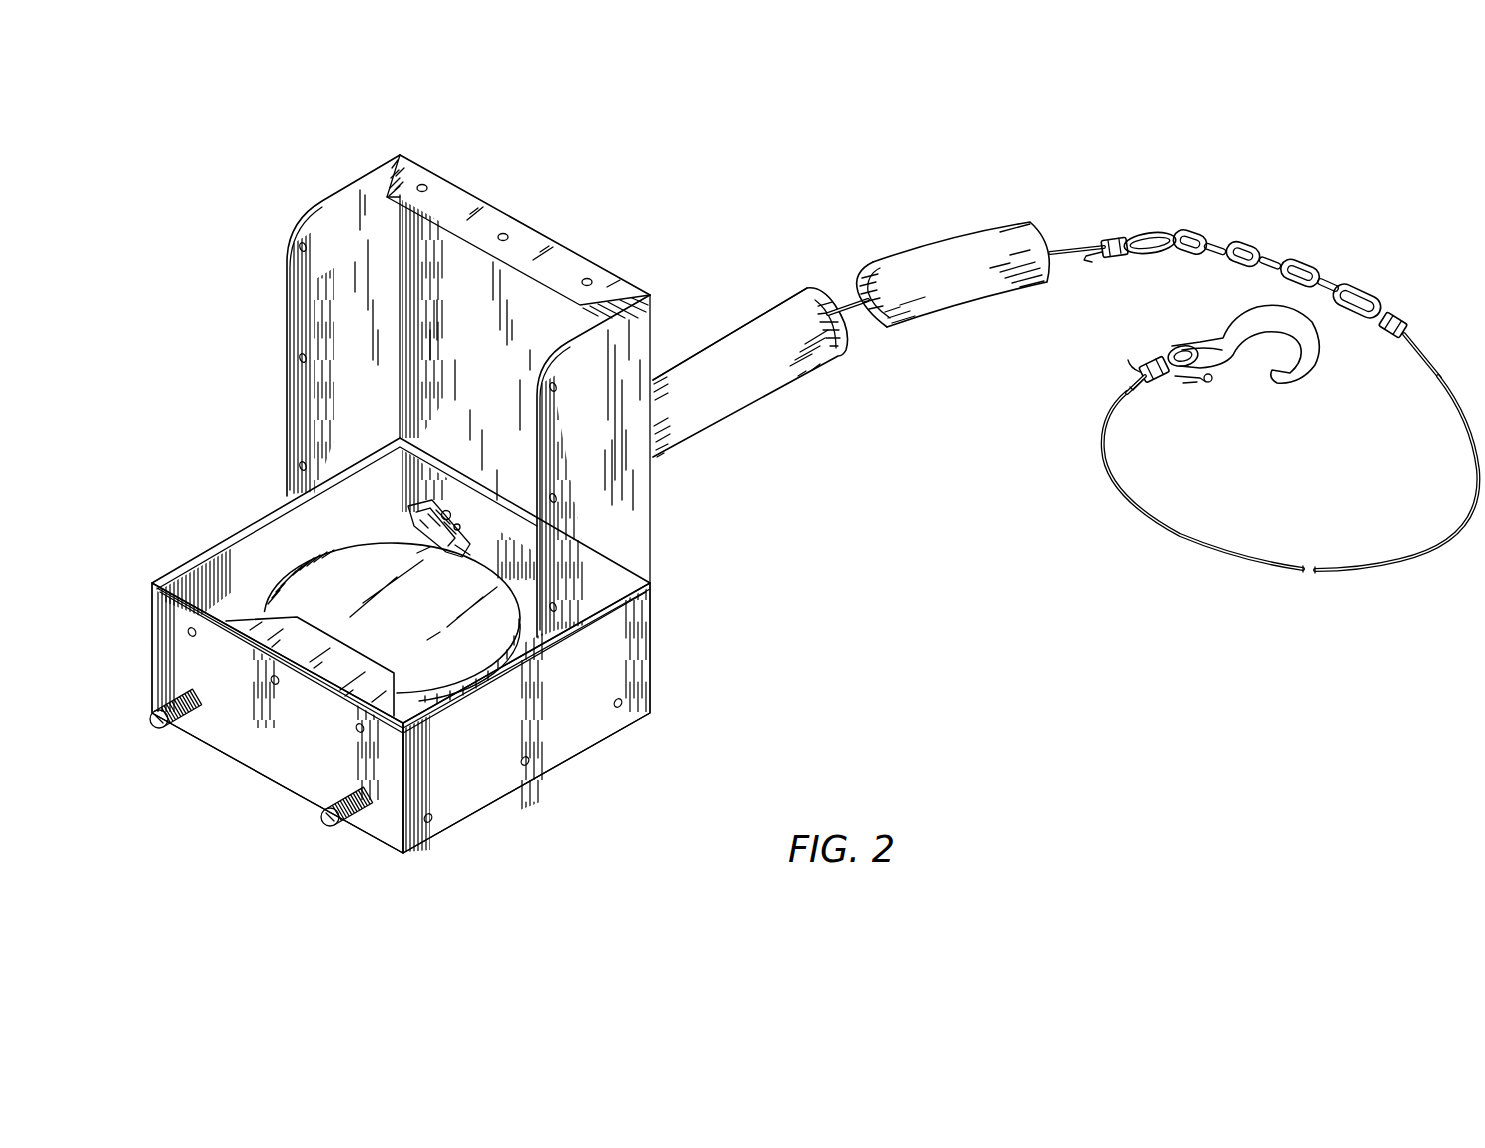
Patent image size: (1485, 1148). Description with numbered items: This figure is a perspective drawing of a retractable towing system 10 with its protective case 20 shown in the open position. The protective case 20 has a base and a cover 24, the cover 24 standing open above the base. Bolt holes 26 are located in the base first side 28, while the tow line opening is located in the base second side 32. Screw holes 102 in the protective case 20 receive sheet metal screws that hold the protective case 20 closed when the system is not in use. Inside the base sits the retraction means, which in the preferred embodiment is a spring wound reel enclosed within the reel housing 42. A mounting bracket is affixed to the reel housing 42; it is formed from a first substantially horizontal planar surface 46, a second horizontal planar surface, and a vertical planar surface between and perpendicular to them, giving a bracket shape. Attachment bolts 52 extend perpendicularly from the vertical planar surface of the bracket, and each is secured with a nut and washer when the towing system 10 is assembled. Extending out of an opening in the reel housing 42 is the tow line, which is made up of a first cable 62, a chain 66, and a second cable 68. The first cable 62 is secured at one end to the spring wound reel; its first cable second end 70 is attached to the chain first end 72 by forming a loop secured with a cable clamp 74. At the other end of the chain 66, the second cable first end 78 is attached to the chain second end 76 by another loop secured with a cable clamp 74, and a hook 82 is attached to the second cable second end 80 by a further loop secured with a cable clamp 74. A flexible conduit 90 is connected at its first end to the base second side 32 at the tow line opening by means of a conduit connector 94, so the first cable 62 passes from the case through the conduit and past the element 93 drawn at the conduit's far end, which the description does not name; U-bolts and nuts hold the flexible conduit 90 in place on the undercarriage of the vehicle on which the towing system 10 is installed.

The towing system 10 is at (916, 210).
The protective case 20 is at (250, 486).
The cover 24 is at (487, 393).
The bolt holes 26 is at (200, 695).
The base first side 28 is at (262, 752).
The base second side 32 is at (447, 518).
The reel housing 42 is at (381, 623).
The first substantially horizontal planar surface 46 is at (316, 659).
The attachment bolts 52 is at (156, 723).
The first cable 62 is at (465, 548).
The chain 66 is at (1246, 243).
The second cable 68 is at (1355, 567).
The first cable second end 70 is at (1092, 260).
The chain first end 72 is at (1181, 230).
The cable clamp 74 is at (1110, 237).
The chain second end 76 is at (1343, 294).
The second cable first end 78 is at (1413, 342).
The second cable second end 80 is at (1139, 391).
The hook 82 is at (1318, 362).
The flexible conduit 90 is at (723, 342).
The handle grip 93 is at (1042, 243).
The conduit connector 94 is at (457, 522).
The screw holes 102 is at (429, 822).